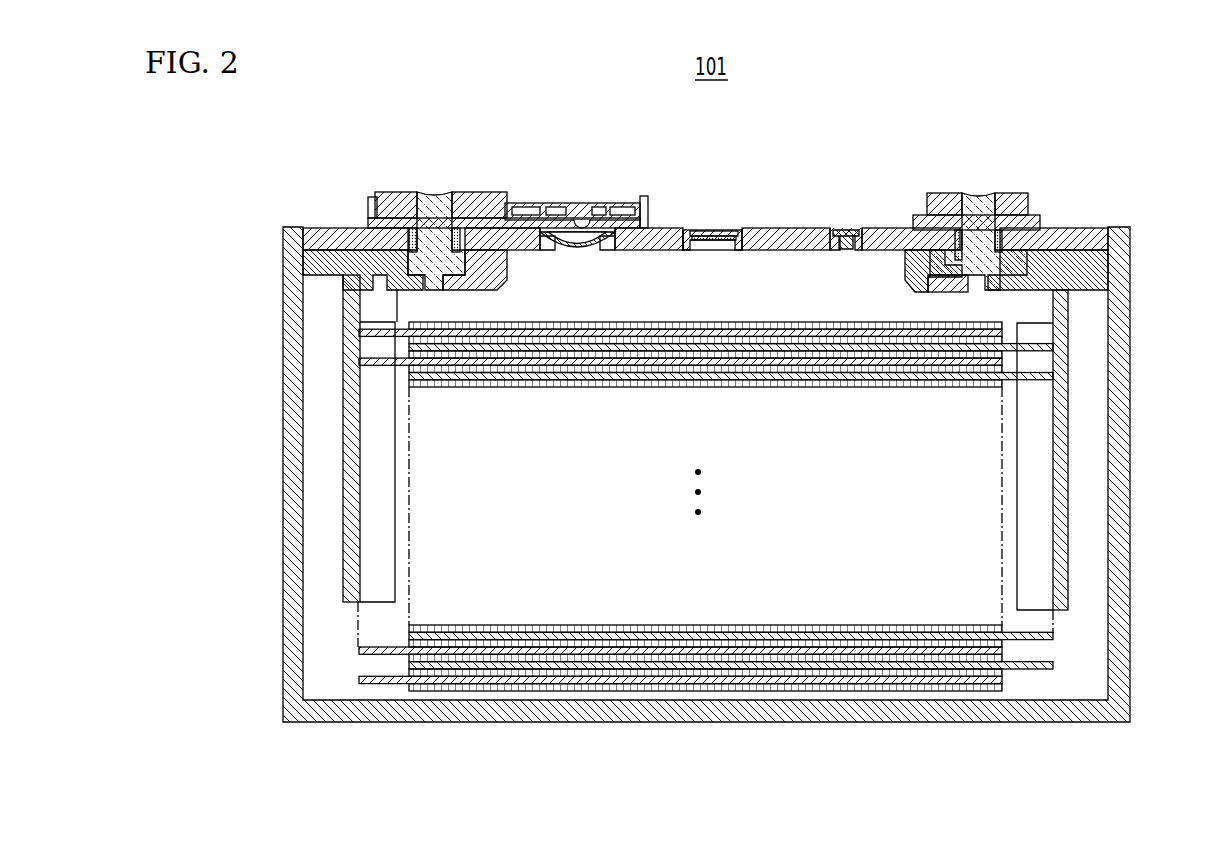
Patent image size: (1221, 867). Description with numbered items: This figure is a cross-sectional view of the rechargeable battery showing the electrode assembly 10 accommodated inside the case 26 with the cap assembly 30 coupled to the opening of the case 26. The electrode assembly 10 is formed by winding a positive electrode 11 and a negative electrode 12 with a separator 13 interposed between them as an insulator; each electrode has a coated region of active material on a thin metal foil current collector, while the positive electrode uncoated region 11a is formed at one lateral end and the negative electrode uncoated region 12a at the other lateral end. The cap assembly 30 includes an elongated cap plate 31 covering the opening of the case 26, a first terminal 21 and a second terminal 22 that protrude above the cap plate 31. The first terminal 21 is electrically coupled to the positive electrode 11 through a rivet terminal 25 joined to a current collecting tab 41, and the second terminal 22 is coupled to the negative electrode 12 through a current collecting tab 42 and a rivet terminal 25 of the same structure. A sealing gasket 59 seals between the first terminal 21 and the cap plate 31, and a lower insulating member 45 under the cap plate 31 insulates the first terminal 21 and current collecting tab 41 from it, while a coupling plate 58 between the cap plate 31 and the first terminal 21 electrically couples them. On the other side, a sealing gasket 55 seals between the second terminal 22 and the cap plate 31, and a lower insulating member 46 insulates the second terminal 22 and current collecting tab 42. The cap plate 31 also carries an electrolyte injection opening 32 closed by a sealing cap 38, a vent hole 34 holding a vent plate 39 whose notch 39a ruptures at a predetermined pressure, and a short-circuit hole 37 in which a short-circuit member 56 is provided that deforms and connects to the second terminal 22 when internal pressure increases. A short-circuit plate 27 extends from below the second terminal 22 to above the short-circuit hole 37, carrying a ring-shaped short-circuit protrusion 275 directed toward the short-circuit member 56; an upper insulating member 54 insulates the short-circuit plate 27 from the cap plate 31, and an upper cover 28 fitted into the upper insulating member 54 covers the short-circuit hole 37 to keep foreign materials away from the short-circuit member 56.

The electrode assembly 10 is at (705, 550).
The positive electrode 11 is at (731, 559).
The positive electrode uncoated region 11a is at (1028, 670).
The negative electrode 12 is at (680, 551).
The negative electrode uncoated region 12a is at (377, 684).
The separator 13 is at (712, 660).
The first terminal 21 is at (1008, 198).
The second terminal 22 is at (398, 198).
The rivet terminal 25 is at (433, 200).
The case 26 is at (1125, 515).
The short-circuit plate 27 is at (493, 218).
The upper cover 28 is at (560, 203).
The short-circuit protrusion 275 is at (586, 216).
The cap assembly 30 is at (713, 189).
The cap plate 31 is at (1092, 235).
The electrolyte injection opening 32 is at (850, 252).
The vent hole 34 is at (716, 252).
The short-circuit hole 37 is at (555, 250).
The sealing cap 38 is at (848, 232).
The vent plate 39 is at (737, 232).
The notch 39a is at (712, 232).
The current collecting tab 41 is at (1062, 330).
The current collecting tab 42 is at (350, 350).
The lower insulating member 45 is at (1100, 270).
The lower insulating member 46 is at (320, 275).
The upper insulating member 54 is at (645, 198).
The sealing gasket 55 is at (413, 240).
The short-circuit member 56 is at (592, 250).
The coupling plate 58 is at (1035, 224).
The sealing gasket 59 is at (953, 238).